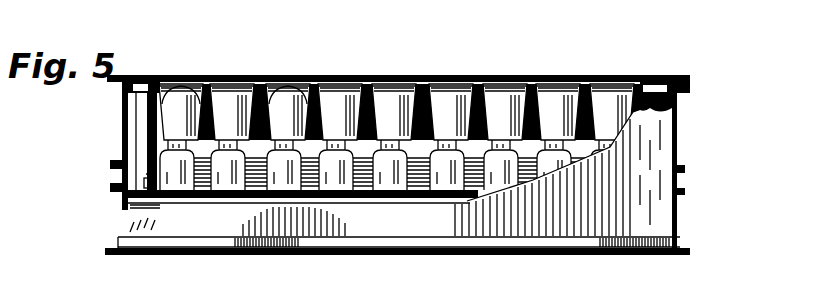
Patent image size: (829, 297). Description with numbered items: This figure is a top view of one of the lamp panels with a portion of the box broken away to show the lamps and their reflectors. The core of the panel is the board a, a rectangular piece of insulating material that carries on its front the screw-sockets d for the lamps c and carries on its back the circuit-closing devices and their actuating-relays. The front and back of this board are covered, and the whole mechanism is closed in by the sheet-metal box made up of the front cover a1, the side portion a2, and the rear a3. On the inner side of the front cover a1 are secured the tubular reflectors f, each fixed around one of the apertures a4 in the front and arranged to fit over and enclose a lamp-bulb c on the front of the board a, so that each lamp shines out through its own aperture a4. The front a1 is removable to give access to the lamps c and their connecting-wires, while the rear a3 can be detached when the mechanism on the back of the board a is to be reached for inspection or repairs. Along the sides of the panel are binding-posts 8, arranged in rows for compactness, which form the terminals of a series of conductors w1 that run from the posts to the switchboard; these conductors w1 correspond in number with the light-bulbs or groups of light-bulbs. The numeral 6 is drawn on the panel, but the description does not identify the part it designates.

The board a is at (122, 198).
The front cover a1 is at (579, 70).
The sheet-metal box a2 is at (696, 136).
The rear cover a3 is at (372, 251).
The apertures a4 is at (185, 73).
The lamps c is at (396, 137).
The screw-sockets d is at (345, 205).
The tubular reflectors f is at (210, 107).
The conductors w1 is at (715, 180).
The pipe 6 is at (145, 222).
The binding-posts 8 is at (152, 197).